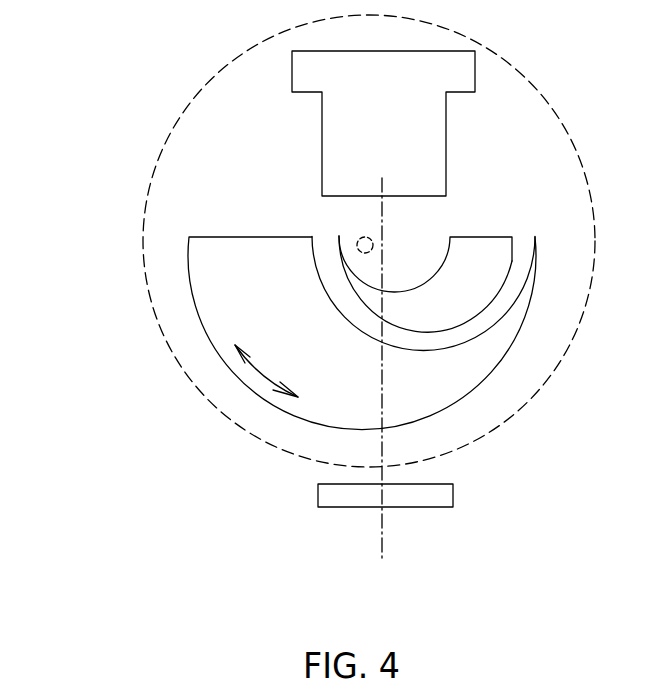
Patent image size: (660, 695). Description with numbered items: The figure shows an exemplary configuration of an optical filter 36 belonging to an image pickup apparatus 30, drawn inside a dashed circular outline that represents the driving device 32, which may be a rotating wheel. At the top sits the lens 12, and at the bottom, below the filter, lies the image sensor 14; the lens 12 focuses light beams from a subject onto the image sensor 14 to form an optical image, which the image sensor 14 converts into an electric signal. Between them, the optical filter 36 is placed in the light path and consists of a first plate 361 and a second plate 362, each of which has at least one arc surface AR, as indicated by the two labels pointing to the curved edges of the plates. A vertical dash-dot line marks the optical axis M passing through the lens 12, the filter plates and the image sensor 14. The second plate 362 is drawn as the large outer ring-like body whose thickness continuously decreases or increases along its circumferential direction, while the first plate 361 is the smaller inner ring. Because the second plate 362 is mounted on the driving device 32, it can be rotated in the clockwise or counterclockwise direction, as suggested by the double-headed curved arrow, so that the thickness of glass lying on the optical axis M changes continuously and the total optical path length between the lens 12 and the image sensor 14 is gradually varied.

The image pickup apparatus 30 is at (88, 36).
The driving device 32 is at (160, 333).
The lens 12 is at (389, 140).
The image sensor 14 is at (402, 504).
The optical filter 36 is at (362, 333).
The first plate 361 is at (465, 314).
The second plate 362 is at (377, 384).
The optical axis M is at (382, 542).
The arc surface AR is at (512, 264).